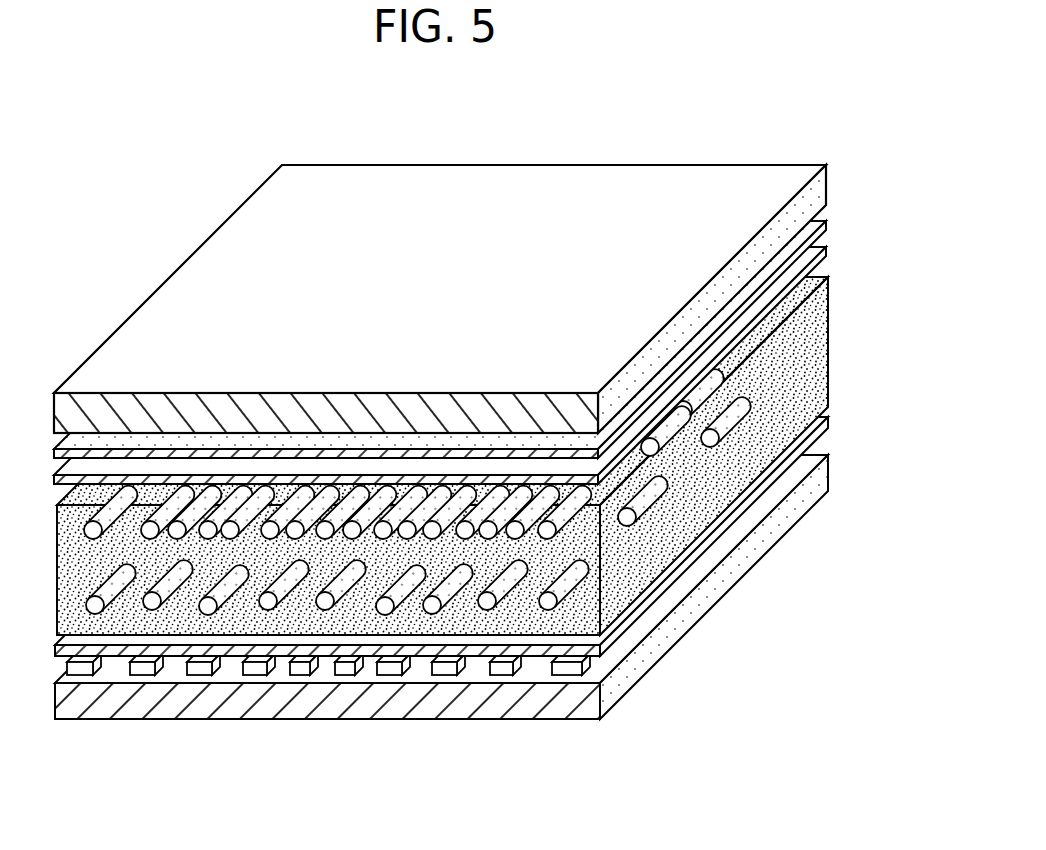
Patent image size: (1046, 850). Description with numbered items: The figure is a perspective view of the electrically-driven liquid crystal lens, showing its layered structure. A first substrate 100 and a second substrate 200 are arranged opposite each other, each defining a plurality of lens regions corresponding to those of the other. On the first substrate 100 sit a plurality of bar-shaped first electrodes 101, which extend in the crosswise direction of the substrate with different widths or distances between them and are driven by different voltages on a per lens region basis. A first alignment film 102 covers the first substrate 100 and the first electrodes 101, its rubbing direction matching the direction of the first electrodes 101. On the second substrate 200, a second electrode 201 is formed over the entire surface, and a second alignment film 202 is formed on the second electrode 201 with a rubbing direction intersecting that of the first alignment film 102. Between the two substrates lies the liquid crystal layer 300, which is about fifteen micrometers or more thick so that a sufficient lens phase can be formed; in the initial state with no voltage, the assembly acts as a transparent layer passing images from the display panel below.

The first substrate 100 is at (826, 472).
The first electrodes 101 is at (568, 671).
The first alignment film 102 is at (826, 425).
The liquid crystal layer 300 is at (826, 337).
The second alignment film 202 is at (826, 258).
The second electrode 201 is at (826, 222).
The second substrate 200 is at (826, 181).